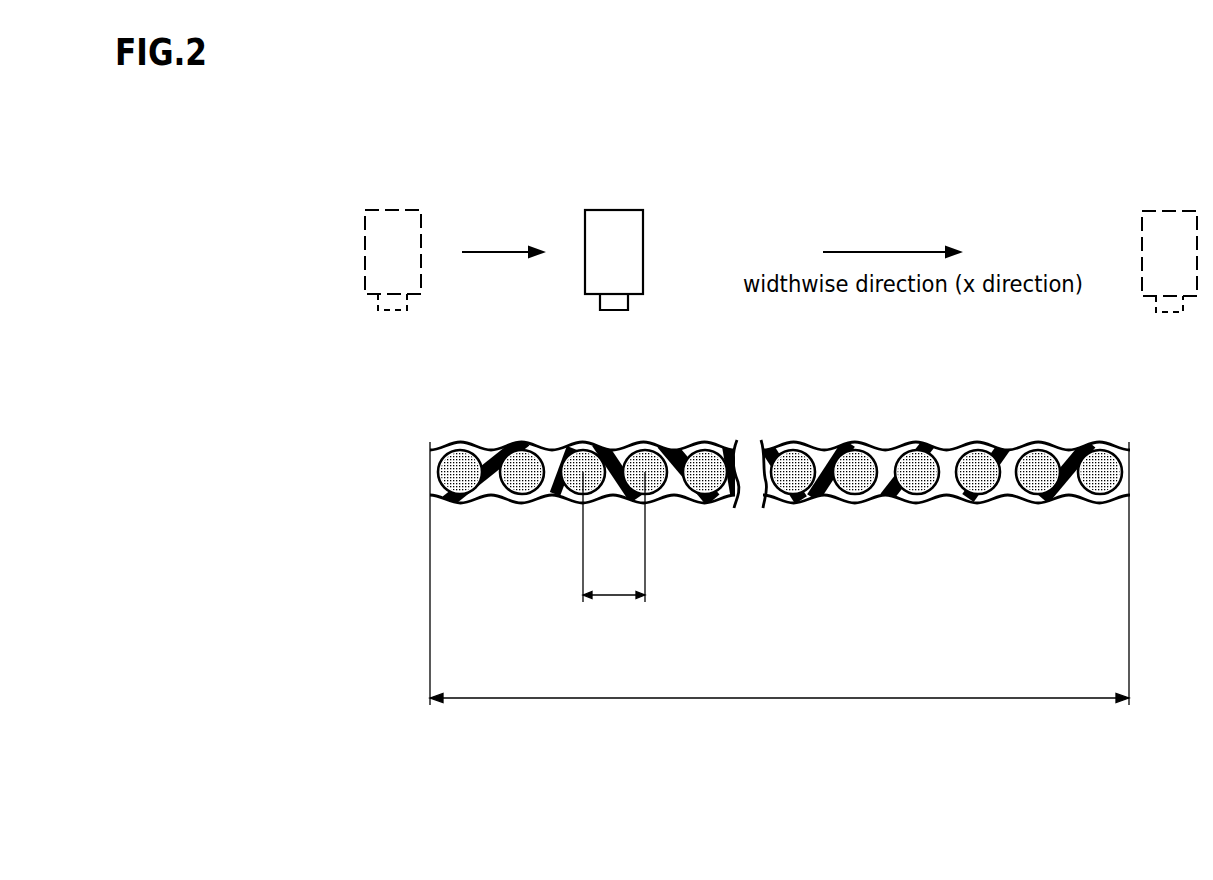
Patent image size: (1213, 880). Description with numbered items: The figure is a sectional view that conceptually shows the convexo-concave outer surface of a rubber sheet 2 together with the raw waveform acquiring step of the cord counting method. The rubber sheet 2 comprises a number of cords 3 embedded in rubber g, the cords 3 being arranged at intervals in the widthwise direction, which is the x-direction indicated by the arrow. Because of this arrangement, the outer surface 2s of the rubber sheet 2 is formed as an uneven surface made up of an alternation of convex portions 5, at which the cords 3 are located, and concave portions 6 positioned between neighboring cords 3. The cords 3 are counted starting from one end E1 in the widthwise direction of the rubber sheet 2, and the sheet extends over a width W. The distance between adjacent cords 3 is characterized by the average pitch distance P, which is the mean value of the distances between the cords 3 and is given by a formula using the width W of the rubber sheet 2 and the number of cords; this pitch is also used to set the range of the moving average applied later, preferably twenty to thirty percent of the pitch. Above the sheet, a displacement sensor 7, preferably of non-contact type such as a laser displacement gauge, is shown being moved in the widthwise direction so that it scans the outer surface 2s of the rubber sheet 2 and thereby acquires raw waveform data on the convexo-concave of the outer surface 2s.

The rubber sheet 2 is at (780, 473).
The outer surface 2s is at (667, 448).
The cord 3 is at (458, 480).
The convex portion 5 is at (462, 441).
The concave portion 6 is at (495, 441).
The displacement sensor 7 is at (613, 209).
The rubber g is at (947, 485).
The average pitch distance P is at (613, 596).
The width W is at (778, 700).
The one end E1 is at (430, 480).